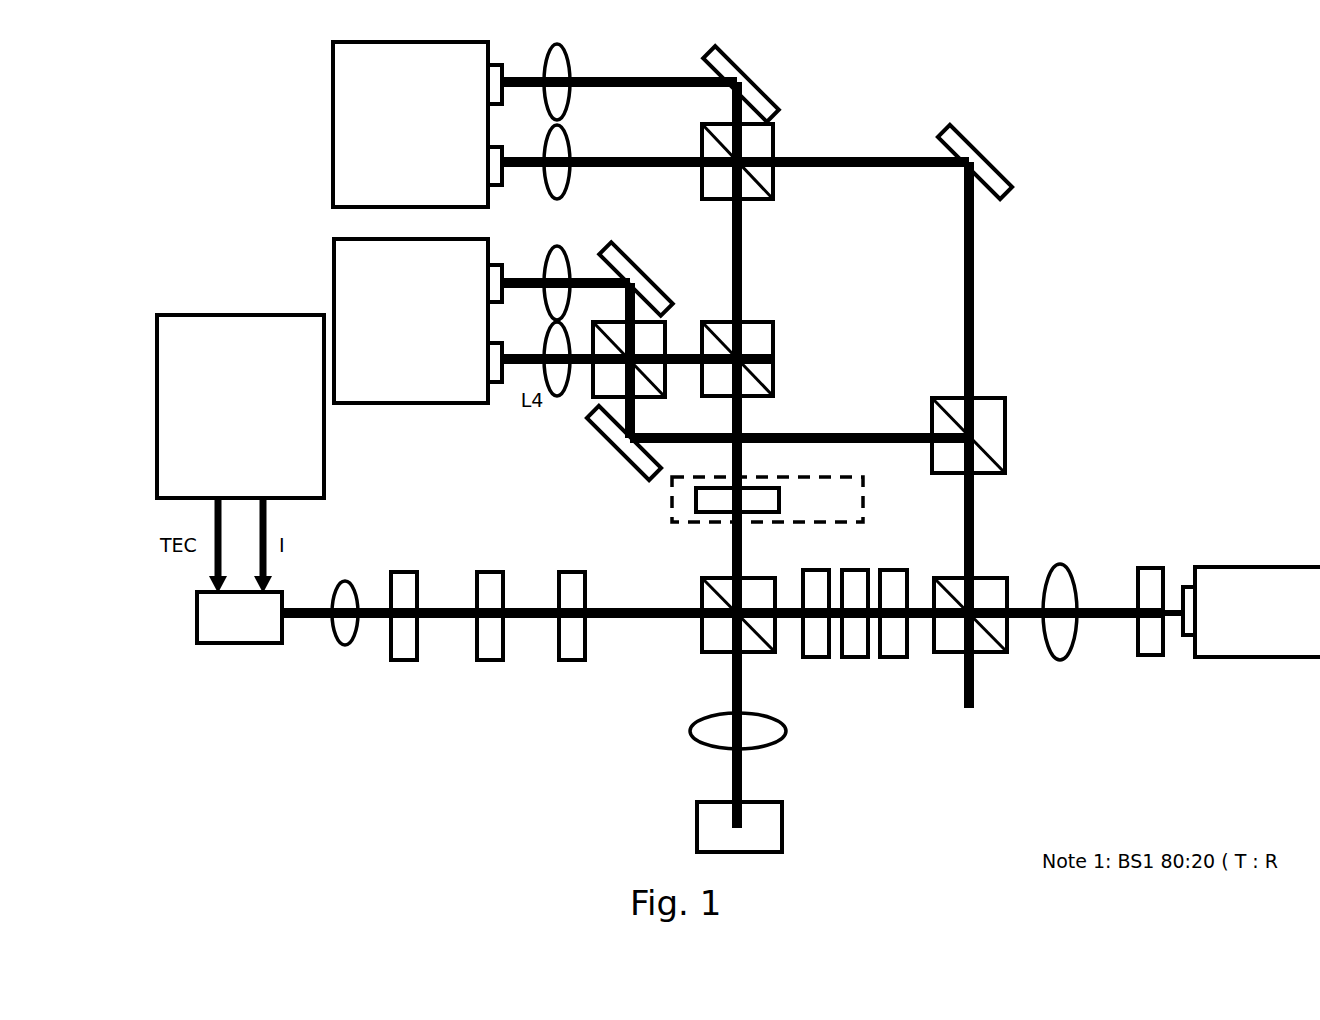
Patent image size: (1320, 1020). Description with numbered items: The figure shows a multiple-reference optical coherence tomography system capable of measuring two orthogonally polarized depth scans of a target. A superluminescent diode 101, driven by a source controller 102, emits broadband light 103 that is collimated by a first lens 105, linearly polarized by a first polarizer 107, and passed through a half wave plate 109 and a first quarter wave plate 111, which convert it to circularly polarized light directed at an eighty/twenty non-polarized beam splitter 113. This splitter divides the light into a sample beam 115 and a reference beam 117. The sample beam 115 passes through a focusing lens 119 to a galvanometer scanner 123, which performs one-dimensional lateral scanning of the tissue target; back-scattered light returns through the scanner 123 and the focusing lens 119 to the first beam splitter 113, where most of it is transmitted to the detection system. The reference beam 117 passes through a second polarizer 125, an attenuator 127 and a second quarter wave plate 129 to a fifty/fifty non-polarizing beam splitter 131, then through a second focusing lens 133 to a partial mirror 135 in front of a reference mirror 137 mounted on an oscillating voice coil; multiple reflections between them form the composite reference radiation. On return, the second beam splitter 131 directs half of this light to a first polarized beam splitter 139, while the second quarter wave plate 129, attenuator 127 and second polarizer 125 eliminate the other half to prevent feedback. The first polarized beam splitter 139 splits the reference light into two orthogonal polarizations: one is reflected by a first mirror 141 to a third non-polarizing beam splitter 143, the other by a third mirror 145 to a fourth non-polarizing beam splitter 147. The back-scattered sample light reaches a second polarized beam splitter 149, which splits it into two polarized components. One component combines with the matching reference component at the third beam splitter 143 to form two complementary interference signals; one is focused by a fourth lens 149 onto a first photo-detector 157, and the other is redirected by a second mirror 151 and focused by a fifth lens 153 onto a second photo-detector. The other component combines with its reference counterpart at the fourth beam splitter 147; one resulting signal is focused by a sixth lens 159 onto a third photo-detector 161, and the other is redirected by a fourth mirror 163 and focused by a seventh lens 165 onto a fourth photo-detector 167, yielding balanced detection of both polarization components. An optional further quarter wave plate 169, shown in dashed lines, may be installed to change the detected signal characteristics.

The superluminescent diode 101 is at (233, 645).
The SLD controller 102 is at (213, 313).
The light 103 is at (303, 623).
The lens L1 105 is at (358, 577).
The polarizer POL1 107 is at (380, 655).
The half wave plate HWP1 109 is at (490, 570).
The quarter wave plate QWP1 111 is at (597, 657).
The non-polarized beam splitter BS1 113 is at (700, 578).
The sample beam 115 is at (727, 683).
The reference beam 117 is at (797, 623).
The focusing lens L2 119 is at (717, 748).
The Galvo scanner 123 is at (790, 842).
The second polarizer POL2 125 is at (815, 660).
The attenuator Attn 127 is at (870, 657).
The second quarter wave plate QWP2 129 is at (910, 643).
The non-polarizing beam splitter BS2 131 is at (1010, 642).
The focusing lens L3 133 is at (1075, 640).
The partial mirror PM 135 is at (1160, 653).
The reference mirror RM 137 is at (1177, 585).
The polarized beam splitter PBS1 139 is at (1007, 430).
The mirror M1 141 is at (627, 470).
The non-polarizing beam splitter BS3 143 is at (642, 400).
The mirror M3 145 is at (962, 127).
The non-polarizing beam splitter BS4 147 is at (777, 147).
The polarized beam splitter PBS2 149 is at (780, 375).
The mirror M2 151 is at (623, 245).
The lens L5 153 is at (568, 243).
The photo-detector PD1 157 is at (500, 387).
The lens L6 159 is at (572, 150).
The photo-detector PD3 161 is at (503, 152).
The mirror M4 163 is at (747, 65).
The lens L7 165 is at (571, 73).
The photo-detector PD4 167 is at (495, 62).
The quarter wave plate QWP4 169 is at (765, 480).